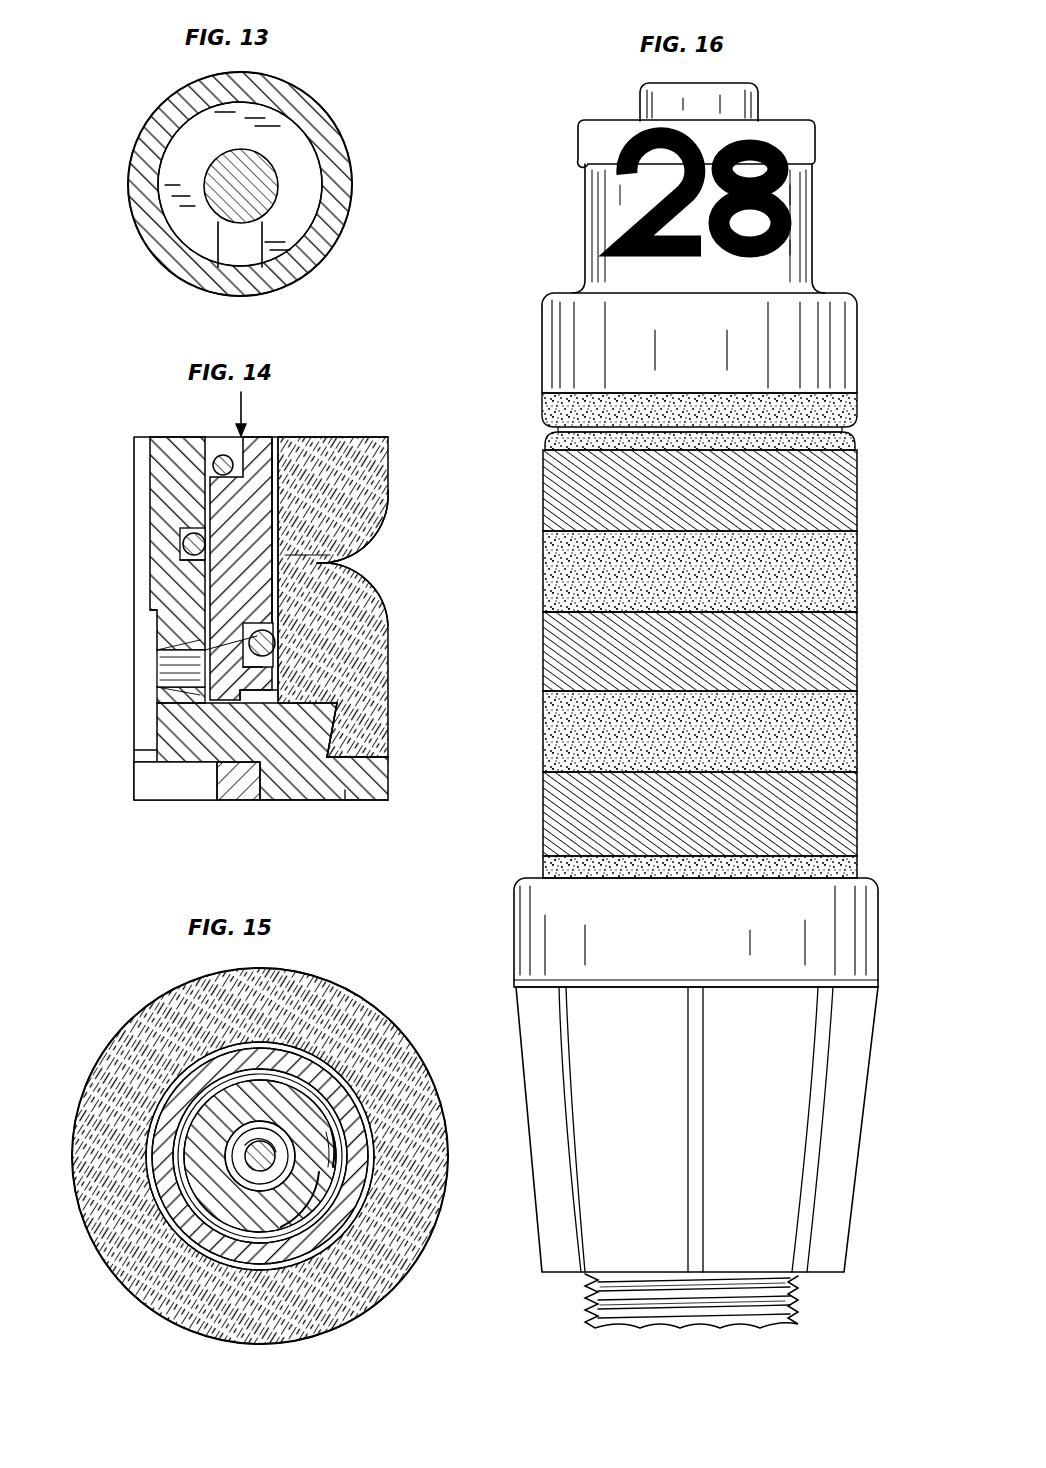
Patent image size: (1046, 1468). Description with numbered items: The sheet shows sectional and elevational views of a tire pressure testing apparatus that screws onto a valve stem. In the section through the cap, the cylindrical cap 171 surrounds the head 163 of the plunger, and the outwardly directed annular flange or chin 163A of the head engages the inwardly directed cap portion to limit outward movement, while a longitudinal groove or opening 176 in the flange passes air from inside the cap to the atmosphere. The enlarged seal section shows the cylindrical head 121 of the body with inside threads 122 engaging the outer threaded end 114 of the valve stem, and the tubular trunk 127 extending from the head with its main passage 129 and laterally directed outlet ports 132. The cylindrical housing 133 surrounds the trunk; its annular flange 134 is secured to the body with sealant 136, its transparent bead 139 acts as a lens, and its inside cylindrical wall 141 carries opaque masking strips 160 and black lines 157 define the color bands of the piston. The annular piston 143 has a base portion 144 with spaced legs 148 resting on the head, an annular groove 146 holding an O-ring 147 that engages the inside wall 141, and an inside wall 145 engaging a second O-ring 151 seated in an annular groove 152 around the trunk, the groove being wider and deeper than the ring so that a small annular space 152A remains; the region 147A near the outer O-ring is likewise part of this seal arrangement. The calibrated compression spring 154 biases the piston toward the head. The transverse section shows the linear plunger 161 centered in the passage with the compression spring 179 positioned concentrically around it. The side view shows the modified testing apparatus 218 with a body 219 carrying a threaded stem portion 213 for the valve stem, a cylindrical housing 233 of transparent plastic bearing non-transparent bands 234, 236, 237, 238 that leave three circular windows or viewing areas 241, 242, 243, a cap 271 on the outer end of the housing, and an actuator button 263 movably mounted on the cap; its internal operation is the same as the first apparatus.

In FIG. 13, the head 163 is at (242, 165).
In FIG. 13, the annular flange or chin 163A is at (288, 130).
In FIG. 13, the cylindrical cap 171 is at (326, 184).
In FIG. 13, the longitudinal groove or opening 176 is at (258, 244).
In FIG. 14, the outer threaded end 114 is at (240, 795).
In FIG. 14, the cylindrical head 121 is at (345, 795).
In FIG. 14, the threads 122 is at (260, 778).
In FIG. 14, the elongated tubular trunk 127 is at (165, 470).
In FIG. 15, the elongated tubular trunk 127 is at (292, 1105).
In FIG. 15, the main passage 129 is at (279, 1164).
In FIG. 14, the laterally directed outlet ports 132 is at (175, 665).
In FIG. 14, the cylindrical housing 133 is at (348, 430).
In FIG. 15, the cylindrical housing 133 is at (163, 988).
In FIG. 14, the annular flange 134 is at (370, 730).
In FIG. 14, the sealant 136 is at (380, 758).
In FIG. 14, the circumferential transparent bead 139 is at (372, 495).
In FIG. 14, the inside cylindrical wall 141 is at (283, 450).
In FIG. 14, the annular piston 143 is at (254, 445).
In FIG. 15, the annular piston 143 is at (178, 1098).
In FIG. 14, the base portion 144 is at (272, 683).
In FIG. 14, the inside wall 145 is at (345, 585).
In FIG. 14, the annular groove 146 is at (262, 667).
In FIG. 14, the O-ring 147 is at (275, 643).
In FIG. 14, the groove 147A is at (205, 650).
In FIG. 14, the spaced legs 148 is at (262, 703).
In FIG. 14, the second O-ring 151 is at (183, 545).
In FIG. 14, the annular groove 152 is at (182, 535).
In FIG. 14, the small annular space 152A is at (200, 560).
In FIG. 14, the calibrated compression spring 154 is at (222, 455).
In FIG. 15, the calibrated compression spring 154 is at (311, 1217).
In FIG. 14, the circumferential black lines 157 is at (281, 483).
In FIG. 14, the cylindrical strips or masks 160 is at (290, 558).
In FIG. 15, the linear plunger 161 is at (251, 1158).
In FIG. 15, the compression spring 179 is at (241, 1167).
In FIG. 16, the threaded stem 213 is at (590, 1304).
In FIG. 16, the testing apparatus 218 is at (870, 276).
In FIG. 16, the body 219 is at (836, 1126).
In FIG. 16, the cylindrical housing 233 is at (856, 610).
In FIG. 16, the non-transparent band 234 is at (572, 568).
In FIG. 16, the non-transparent band 236 is at (565, 745).
In FIG. 16, the non-transparent band 237 is at (556, 434).
In FIG. 16, the non-transparent band 238 is at (560, 862).
In FIG. 16, the circular window or viewing area 241 is at (815, 484).
In FIG. 16, the circular window or viewing area 242 is at (835, 656).
In FIG. 16, the circular window or viewing area 243 is at (832, 813).
In FIG. 16, the actuator button 263 is at (643, 100).
In FIG. 16, the cap 271 is at (586, 178).